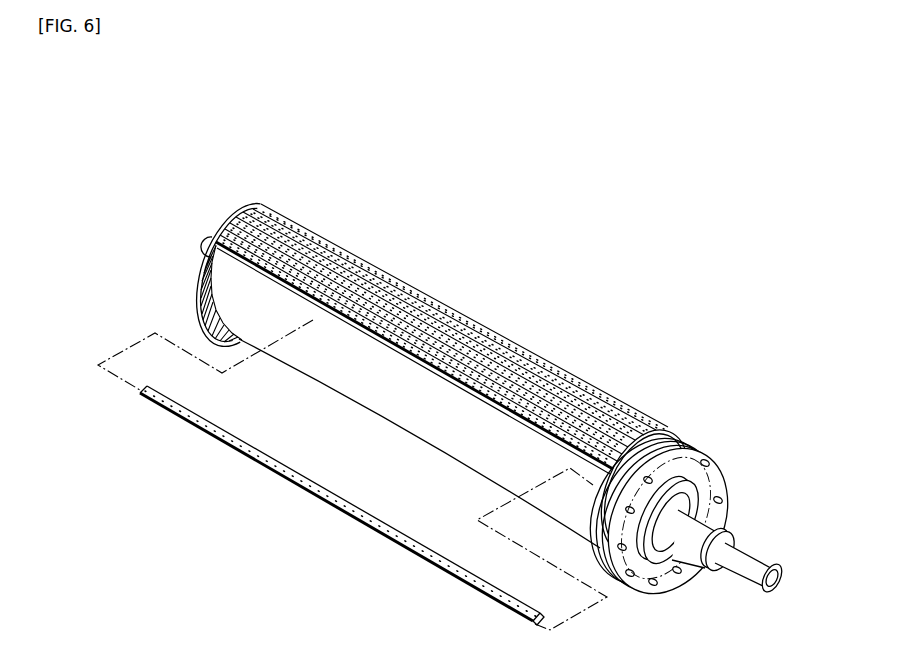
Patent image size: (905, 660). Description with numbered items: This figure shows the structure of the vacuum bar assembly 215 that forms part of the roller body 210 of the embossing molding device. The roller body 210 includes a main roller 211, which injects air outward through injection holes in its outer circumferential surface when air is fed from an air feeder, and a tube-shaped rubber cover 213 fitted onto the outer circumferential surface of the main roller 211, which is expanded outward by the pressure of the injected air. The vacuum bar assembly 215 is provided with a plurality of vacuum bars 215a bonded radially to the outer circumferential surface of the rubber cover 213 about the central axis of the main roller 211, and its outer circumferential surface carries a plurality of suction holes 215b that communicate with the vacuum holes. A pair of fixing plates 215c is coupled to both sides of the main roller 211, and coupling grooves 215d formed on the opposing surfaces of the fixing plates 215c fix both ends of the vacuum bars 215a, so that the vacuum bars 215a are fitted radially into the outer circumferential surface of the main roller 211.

The roller body 210 is at (571, 192).
The main roller 211 is at (720, 477).
The rubber cover 213 is at (523, 453).
The vacuum bar assembly 215 is at (430, 355).
The vacuum bars 215a is at (490, 324).
The suction holes 215b is at (223, 443).
The fixing plates 215c is at (247, 208).
The coupling grooves 215d is at (190, 280).